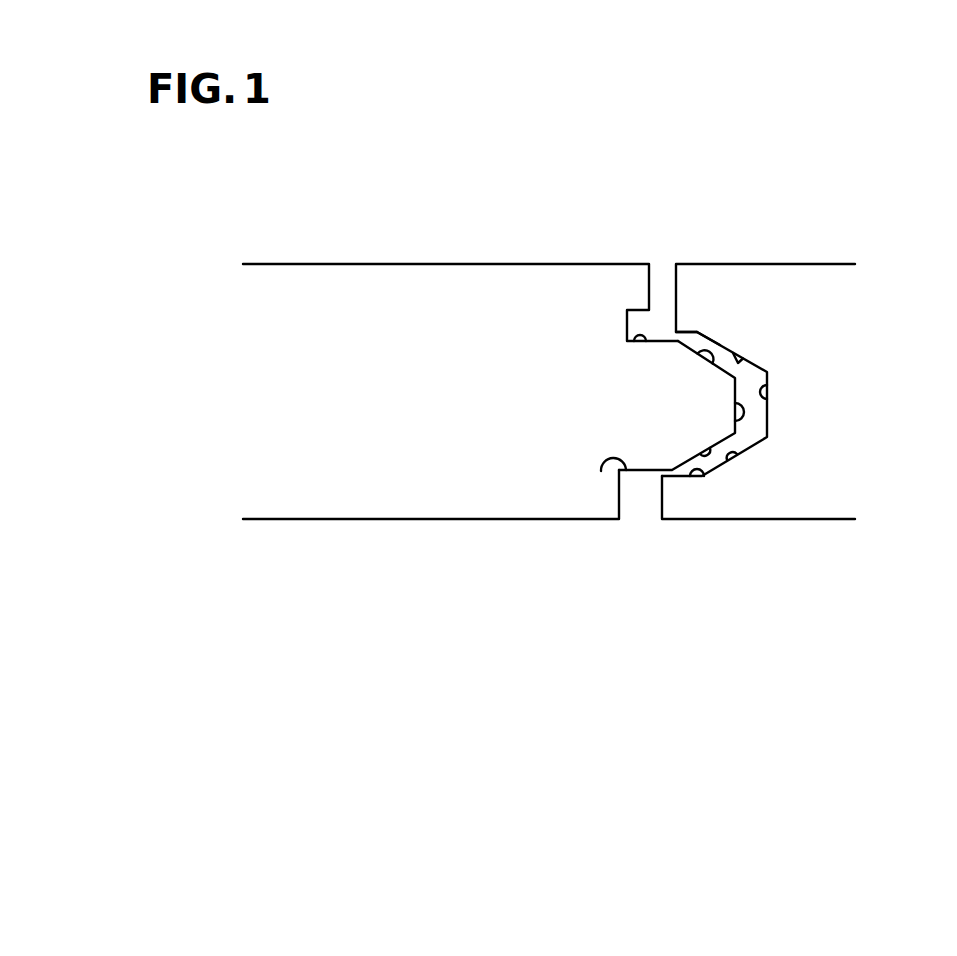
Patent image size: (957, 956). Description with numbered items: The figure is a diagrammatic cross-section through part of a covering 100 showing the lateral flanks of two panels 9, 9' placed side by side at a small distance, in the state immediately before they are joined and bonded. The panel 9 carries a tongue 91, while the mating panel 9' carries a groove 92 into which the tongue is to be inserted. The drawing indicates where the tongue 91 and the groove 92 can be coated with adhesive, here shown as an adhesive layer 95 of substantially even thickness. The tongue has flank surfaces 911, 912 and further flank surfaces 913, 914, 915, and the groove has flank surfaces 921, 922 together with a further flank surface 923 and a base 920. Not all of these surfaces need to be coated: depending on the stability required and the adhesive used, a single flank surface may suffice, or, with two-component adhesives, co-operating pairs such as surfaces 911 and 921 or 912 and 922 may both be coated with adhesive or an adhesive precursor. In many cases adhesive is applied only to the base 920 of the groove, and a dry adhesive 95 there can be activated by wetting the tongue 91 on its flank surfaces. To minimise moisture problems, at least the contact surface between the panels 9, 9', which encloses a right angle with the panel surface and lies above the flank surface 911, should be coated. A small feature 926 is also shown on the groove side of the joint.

The floor panel assembly 100 is at (597, 192).
The panel 9 is at (460, 425).
The panel 9' is at (771, 438).
The tongue 91 is at (643, 423).
The groove 92 is at (752, 422).
The adhesive layer 95 is at (662, 341).
The tongue flank surface 911 is at (645, 346).
The tongue flank surface 912 is at (608, 462).
The tongue flank surface 913 is at (702, 356).
The tongue flank surface 914 is at (733, 403).
The tongue flank surface 915 is at (704, 449).
The base of the groove 920 is at (768, 390).
The groove flank surface 921 is at (697, 332).
The groove flank surface 922 is at (699, 469).
The groove flank surface 923 is at (741, 356).
The protrusion on lower lip slope 926 is at (741, 460).